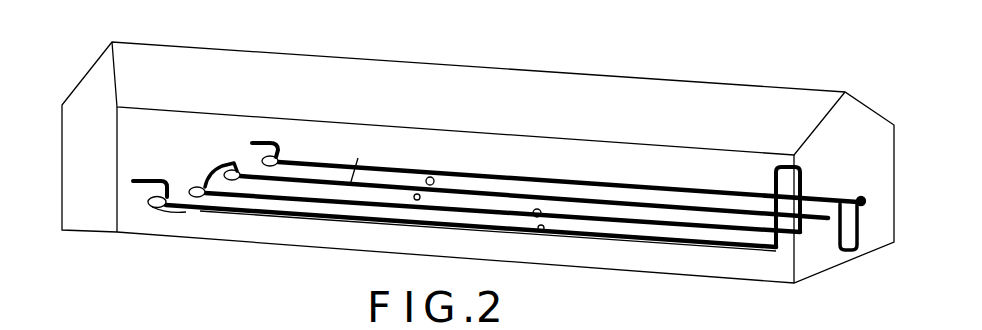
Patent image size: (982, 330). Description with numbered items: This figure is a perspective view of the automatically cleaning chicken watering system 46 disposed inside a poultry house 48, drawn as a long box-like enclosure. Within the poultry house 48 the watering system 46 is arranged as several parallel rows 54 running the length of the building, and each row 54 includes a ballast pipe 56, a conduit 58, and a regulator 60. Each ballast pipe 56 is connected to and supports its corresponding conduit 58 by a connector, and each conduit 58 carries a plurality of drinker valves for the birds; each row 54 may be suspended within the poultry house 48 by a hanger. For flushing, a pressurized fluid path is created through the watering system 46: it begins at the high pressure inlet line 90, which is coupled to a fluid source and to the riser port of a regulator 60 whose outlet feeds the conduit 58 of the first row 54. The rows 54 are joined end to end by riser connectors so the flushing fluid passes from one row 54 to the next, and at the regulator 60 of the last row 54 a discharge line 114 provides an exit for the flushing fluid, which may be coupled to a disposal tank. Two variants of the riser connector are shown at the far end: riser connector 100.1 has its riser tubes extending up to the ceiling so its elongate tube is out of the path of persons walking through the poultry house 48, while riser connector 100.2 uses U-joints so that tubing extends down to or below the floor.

The chicken watering system 46 is at (356, 230).
The poultry house 48 is at (505, 62).
The row 54 is at (191, 183).
The ballast pipe 56 is at (540, 243).
The conduit 58 is at (414, 200).
The regulator 60 is at (236, 161).
The high pressure inlet line 90 is at (156, 178).
The riser connector 100.1 is at (768, 184).
The riser connector 100.2 is at (863, 196).
The discharge line 114 is at (275, 140).